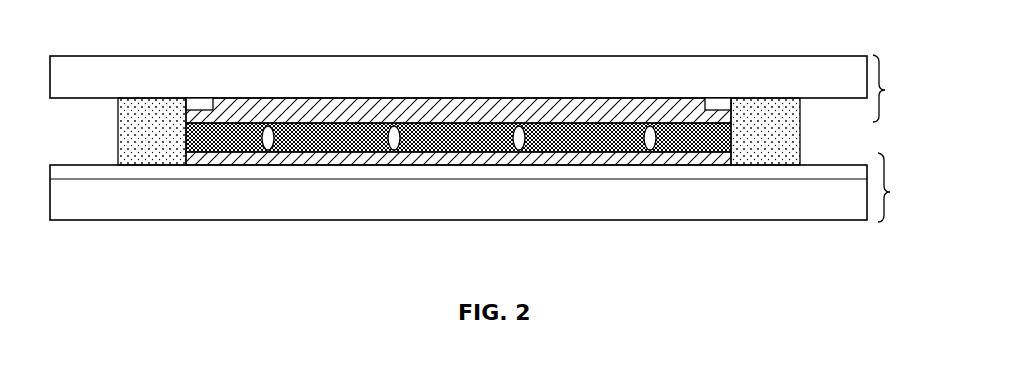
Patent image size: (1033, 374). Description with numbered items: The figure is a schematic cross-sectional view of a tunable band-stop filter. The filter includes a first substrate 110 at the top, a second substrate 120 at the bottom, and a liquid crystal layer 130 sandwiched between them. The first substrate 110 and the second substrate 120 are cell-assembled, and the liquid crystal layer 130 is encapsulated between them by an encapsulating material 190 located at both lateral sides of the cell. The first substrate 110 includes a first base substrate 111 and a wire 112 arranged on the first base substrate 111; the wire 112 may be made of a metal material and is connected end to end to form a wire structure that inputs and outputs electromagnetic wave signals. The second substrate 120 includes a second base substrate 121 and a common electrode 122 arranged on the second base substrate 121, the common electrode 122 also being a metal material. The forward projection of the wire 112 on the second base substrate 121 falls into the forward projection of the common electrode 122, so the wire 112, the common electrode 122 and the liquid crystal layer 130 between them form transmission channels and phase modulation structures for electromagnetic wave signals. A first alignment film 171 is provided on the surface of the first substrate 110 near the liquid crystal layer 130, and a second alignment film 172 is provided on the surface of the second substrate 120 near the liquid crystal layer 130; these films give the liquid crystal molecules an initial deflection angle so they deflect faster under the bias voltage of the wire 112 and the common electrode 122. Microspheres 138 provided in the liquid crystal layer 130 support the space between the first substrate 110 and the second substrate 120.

The first substrate 110 is at (896, 88).
The first base substrate 111 is at (562, 70).
The wire 112 is at (203, 104).
The second substrate 120 is at (902, 187).
The second base substrate 121 is at (503, 203).
The common electrode 122 is at (335, 170).
The liquid crystal layer 130 is at (350, 120).
The microspheres 138 is at (398, 144).
The first alignment film 171 is at (670, 107).
The second alignment film 172 is at (625, 158).
The encapsulating material 190 is at (153, 152).